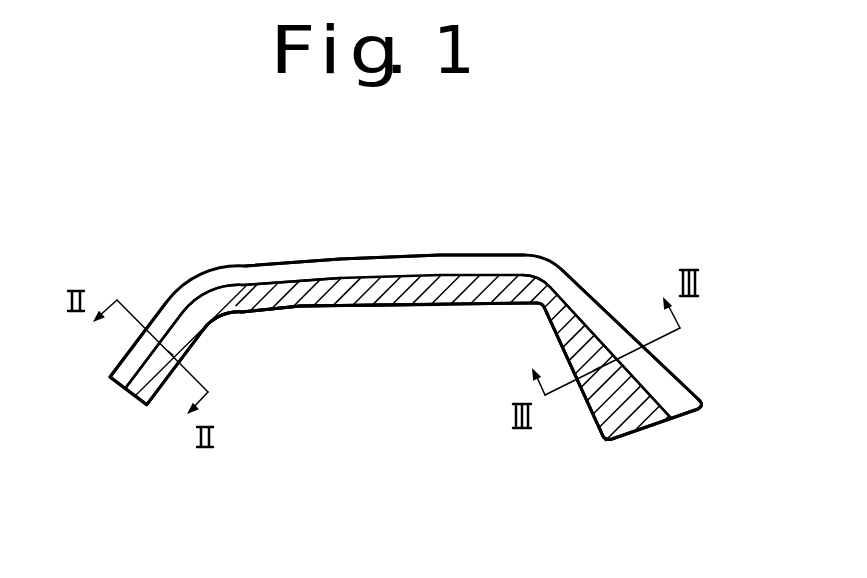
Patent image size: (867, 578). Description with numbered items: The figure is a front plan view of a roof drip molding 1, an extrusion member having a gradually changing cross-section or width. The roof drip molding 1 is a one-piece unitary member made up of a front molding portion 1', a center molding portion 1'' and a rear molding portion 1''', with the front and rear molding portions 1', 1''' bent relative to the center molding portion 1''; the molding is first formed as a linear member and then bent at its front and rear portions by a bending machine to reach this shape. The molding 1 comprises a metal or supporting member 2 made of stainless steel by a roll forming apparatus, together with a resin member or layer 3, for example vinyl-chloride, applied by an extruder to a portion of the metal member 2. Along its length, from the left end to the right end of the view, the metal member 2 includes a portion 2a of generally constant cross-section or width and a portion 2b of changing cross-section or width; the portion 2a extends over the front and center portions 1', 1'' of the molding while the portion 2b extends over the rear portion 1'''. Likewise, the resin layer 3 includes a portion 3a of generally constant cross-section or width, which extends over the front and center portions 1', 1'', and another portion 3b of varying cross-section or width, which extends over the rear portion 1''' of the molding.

The roof drip molding 1 is at (406, 296).
The front molding portion 1' is at (178, 302).
The center molding portion 1'' is at (385, 209).
The rear molding portion 1''' is at (663, 354).
The metal member 2 is at (377, 266).
The portion of the metal member having generally constant cross-section 2a is at (297, 268).
The portion of the metal member having changing cross-section 2b is at (605, 302).
The resin layer 3 is at (384, 308).
The portion of the resin layer having generally constant cross-section 3a is at (297, 304).
The portion of the resin layer having varying cross-section 3b is at (560, 320).